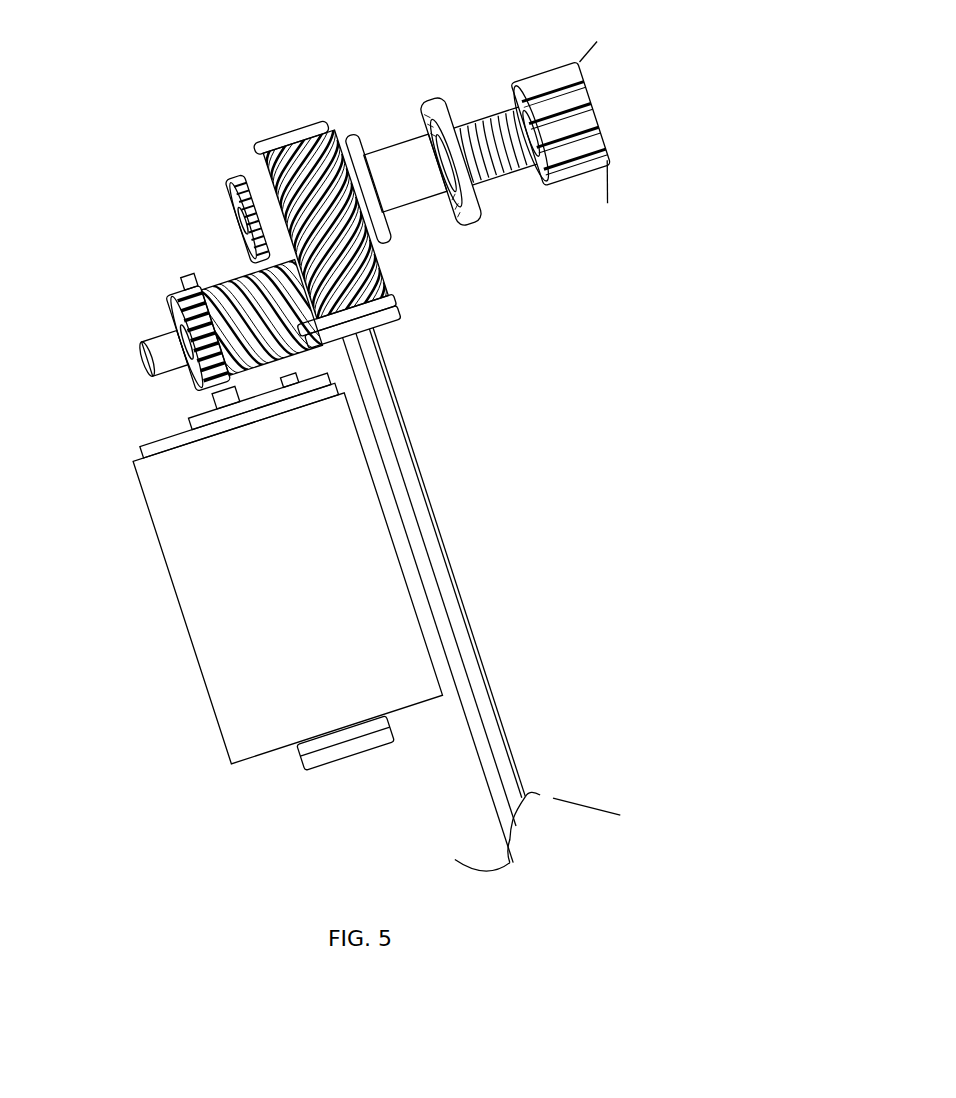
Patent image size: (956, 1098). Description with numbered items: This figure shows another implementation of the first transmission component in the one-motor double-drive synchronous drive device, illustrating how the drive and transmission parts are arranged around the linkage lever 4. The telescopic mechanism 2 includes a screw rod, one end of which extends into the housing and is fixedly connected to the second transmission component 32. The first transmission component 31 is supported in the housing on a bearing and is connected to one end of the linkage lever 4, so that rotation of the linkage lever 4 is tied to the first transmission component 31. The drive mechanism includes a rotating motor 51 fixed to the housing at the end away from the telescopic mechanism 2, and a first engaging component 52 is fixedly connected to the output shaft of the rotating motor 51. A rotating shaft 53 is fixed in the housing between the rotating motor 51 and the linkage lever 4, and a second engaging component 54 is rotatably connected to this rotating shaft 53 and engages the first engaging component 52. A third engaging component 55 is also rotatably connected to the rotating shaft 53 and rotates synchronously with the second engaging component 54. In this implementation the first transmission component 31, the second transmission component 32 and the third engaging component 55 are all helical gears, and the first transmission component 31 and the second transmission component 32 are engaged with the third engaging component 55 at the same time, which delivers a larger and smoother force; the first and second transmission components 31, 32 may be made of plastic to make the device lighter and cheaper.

The telescopic mechanism 2 is at (407, 157).
The linkage lever 4 is at (452, 532).
The first transmission component 31 is at (403, 282).
The second transmission component 32 is at (238, 180).
The rotating motor 51 is at (253, 572).
The first engaging component 52 is at (183, 283).
The rotating shaft 53 is at (163, 347).
The second engaging component 54 is at (163, 307).
The third engaging component 55 is at (237, 282).